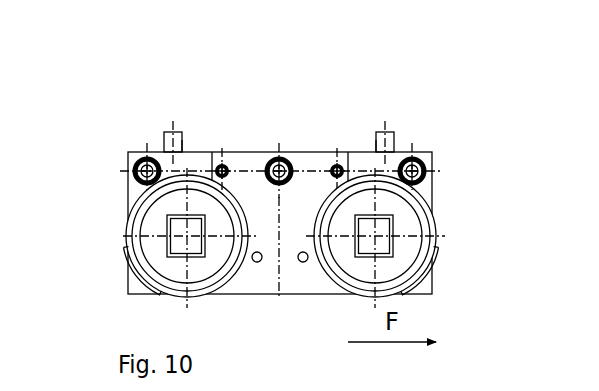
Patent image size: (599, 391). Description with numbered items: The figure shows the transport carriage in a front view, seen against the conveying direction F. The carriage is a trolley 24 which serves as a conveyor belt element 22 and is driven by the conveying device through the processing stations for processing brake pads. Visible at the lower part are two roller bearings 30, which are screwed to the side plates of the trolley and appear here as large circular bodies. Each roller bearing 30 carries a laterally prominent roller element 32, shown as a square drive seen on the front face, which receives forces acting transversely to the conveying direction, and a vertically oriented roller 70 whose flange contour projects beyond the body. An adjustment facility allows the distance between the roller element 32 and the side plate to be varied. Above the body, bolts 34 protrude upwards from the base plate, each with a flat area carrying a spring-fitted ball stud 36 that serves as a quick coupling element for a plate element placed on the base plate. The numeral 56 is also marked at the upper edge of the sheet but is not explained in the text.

The conveyor belt element 22 is at (280, 149).
The trolley 24 is at (280, 223).
The roller bearing 30 is at (152, 223).
The roller element 32 is at (383, 230).
The bolt 34 is at (171, 130).
The ball stud 36 is at (186, 136).
The element 56 is at (78, 16).
The roller 70 is at (128, 258).